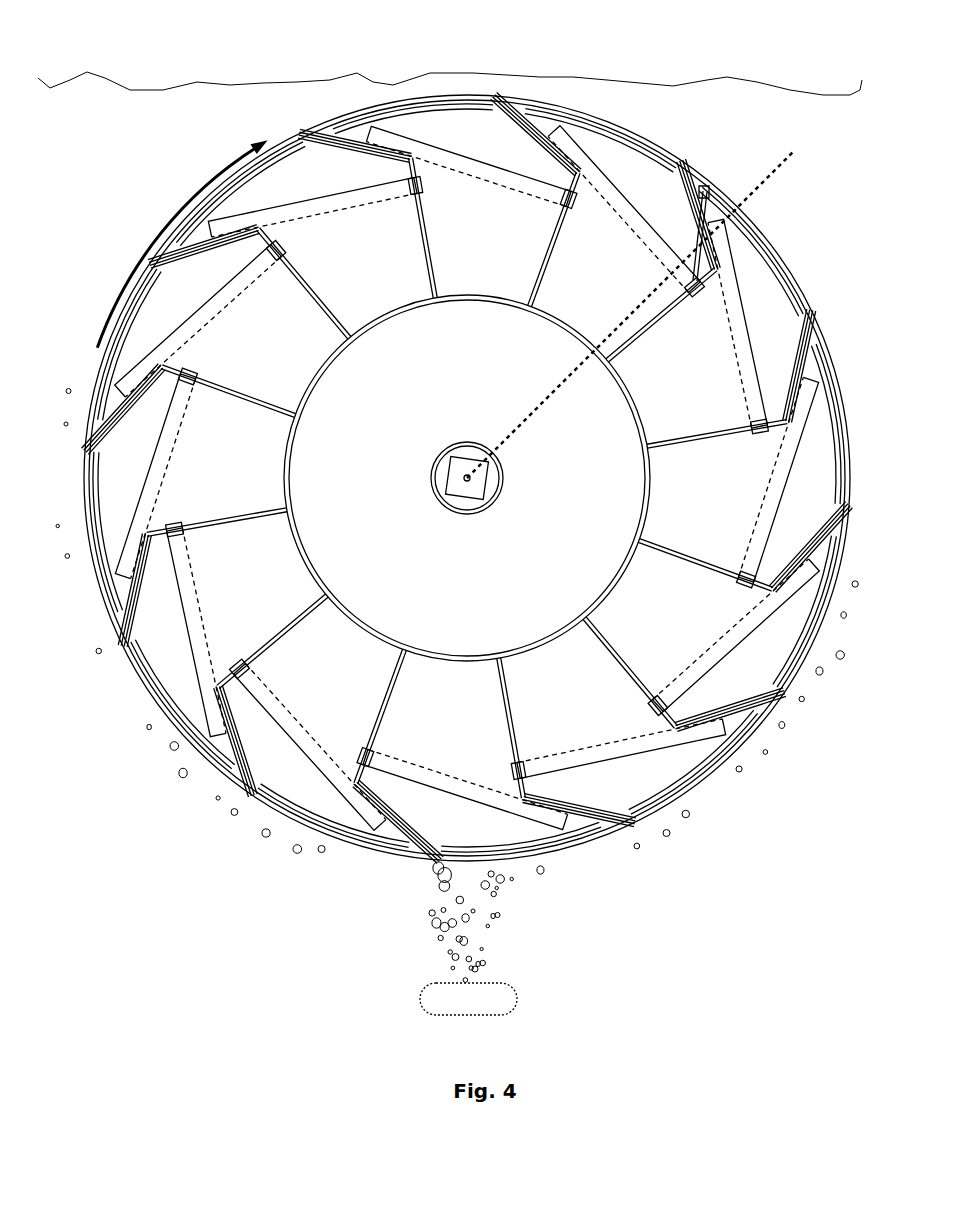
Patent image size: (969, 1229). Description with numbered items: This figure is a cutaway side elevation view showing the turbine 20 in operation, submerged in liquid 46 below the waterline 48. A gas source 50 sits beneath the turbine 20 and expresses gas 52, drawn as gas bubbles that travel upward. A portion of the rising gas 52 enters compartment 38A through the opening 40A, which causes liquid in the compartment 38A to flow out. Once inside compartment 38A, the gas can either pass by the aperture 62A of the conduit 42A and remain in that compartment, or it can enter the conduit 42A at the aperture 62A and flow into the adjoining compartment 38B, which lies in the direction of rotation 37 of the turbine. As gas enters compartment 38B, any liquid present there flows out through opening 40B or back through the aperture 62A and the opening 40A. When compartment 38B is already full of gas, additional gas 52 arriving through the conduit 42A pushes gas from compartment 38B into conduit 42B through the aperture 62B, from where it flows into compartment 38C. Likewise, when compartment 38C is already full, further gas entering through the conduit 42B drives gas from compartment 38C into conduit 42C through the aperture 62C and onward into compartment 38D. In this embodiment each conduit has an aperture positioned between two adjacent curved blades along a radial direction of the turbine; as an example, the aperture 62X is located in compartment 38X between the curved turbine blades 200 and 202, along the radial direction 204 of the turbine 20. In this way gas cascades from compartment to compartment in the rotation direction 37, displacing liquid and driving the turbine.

The turbine 20 is at (183, 168).
The direction of rotation 37 is at (135, 268).
The compartment 38A is at (310, 701).
The compartment 38B is at (238, 613).
The compartment 38C is at (201, 464).
The compartment 38D is at (270, 351).
The compartment 38X is at (661, 378).
The opening 40A is at (413, 850).
The opening 40B is at (235, 774).
The conduit 42A is at (276, 696).
The conduit 42B is at (194, 610).
The conduit 42C is at (151, 486).
The liquid 46 is at (651, 102).
The waterline 48 is at (479, 72).
The gas source 50 is at (487, 991).
The gas 52 is at (460, 932).
The aperture 62A is at (377, 824).
The aperture 62B is at (213, 736).
The aperture 62C is at (117, 575).
The aperture 62X is at (718, 225).
The curved turbine blade 200 is at (672, 284).
The curved turbine blade 202 is at (804, 340).
The radial direction 204 is at (750, 195).